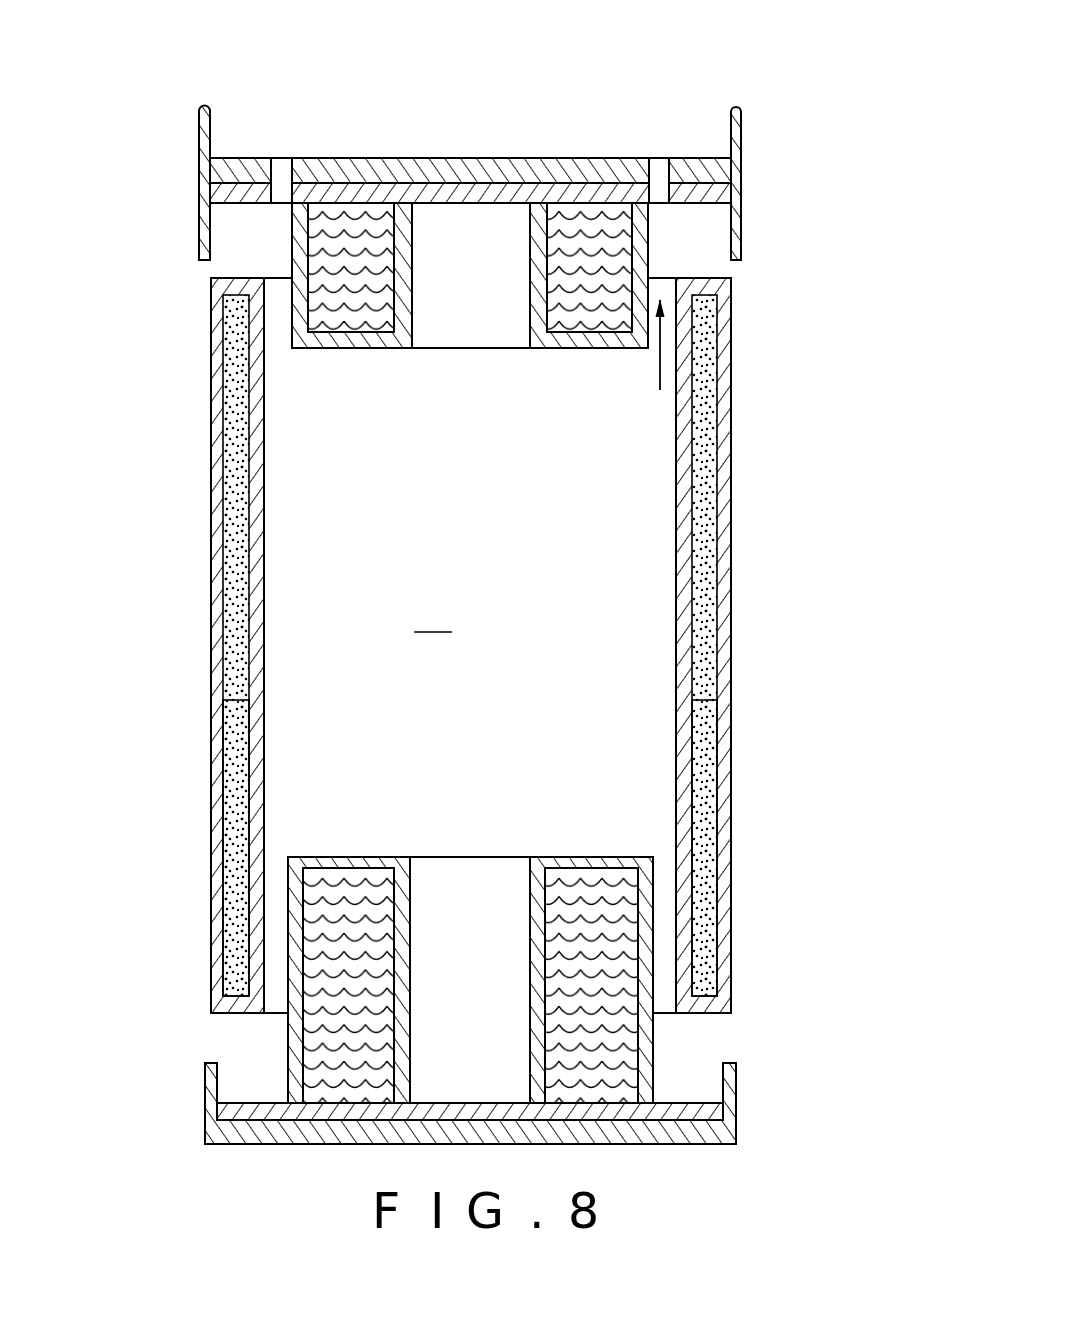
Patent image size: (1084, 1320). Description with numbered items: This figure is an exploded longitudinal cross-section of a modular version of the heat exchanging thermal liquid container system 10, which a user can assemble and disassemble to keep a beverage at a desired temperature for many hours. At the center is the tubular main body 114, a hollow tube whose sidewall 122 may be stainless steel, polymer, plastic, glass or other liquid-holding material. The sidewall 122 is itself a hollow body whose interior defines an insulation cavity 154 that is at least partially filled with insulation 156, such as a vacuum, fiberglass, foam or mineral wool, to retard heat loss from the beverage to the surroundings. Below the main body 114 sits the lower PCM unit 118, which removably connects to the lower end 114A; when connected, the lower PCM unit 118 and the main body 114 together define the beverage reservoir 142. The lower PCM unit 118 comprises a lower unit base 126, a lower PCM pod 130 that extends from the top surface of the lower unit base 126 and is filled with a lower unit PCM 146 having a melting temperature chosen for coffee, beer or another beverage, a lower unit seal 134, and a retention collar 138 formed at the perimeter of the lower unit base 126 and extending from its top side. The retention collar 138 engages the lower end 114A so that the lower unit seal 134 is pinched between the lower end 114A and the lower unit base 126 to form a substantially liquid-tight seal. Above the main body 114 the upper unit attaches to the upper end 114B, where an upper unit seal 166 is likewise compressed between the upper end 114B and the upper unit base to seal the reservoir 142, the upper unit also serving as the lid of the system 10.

The heat exchanging thermal liquid container system 10 is at (845, 393).
The upper unit seal 166 is at (245, 205).
The tubular main body 114 is at (732, 618).
The upper end of main body 114B is at (211, 290).
The lower end of main body 114A is at (212, 980).
The sidewall 122 is at (252, 656).
The insulation cavity 154 is at (235, 507).
The insulation 156 is at (240, 806).
The beverage reservoir 142 is at (433, 612).
The lower PCM unit 118 is at (775, 1108).
The lower unit base 126 is at (677, 1135).
The lower unit retention collar 138 is at (205, 1127).
The lower unit seal 134 is at (263, 1102).
The lower PCM pod 130 is at (288, 1035).
The lower unit PCM 146 is at (342, 890).